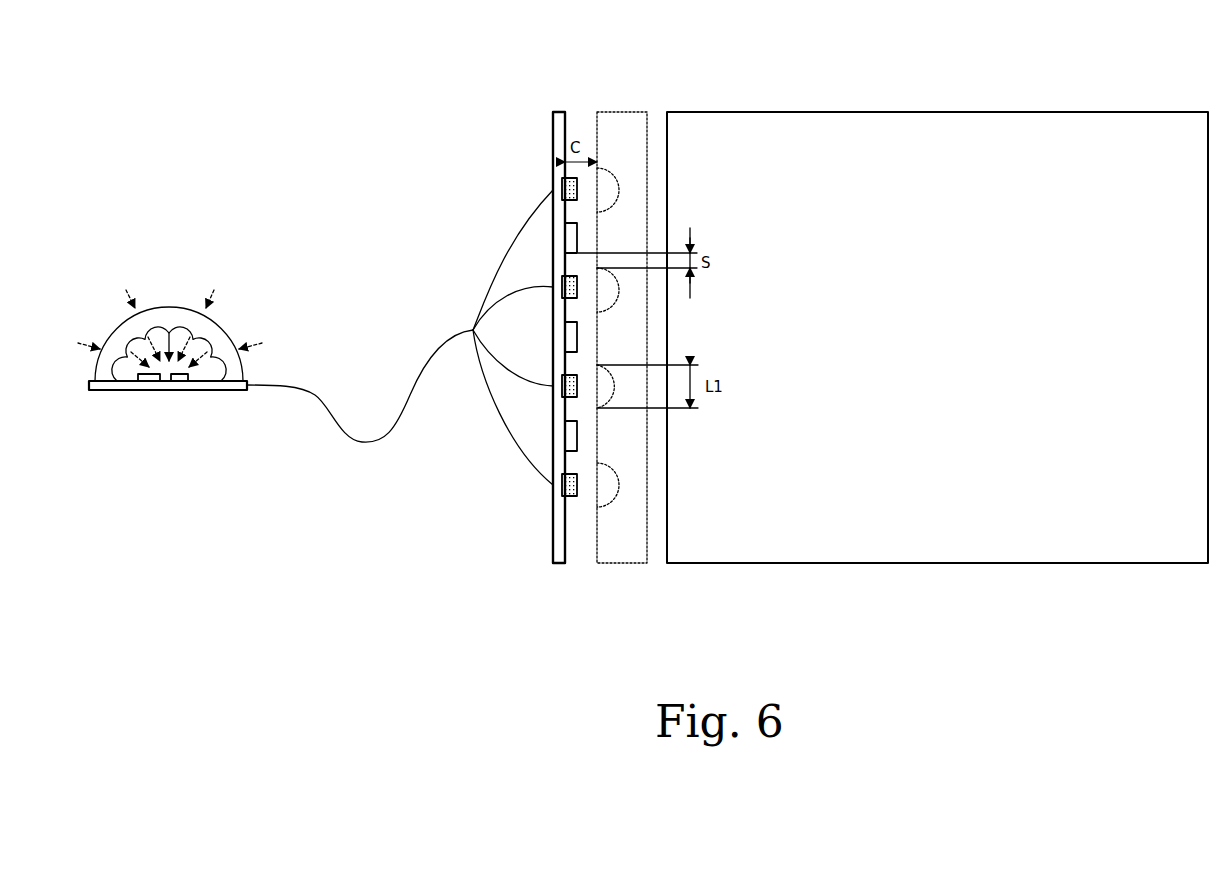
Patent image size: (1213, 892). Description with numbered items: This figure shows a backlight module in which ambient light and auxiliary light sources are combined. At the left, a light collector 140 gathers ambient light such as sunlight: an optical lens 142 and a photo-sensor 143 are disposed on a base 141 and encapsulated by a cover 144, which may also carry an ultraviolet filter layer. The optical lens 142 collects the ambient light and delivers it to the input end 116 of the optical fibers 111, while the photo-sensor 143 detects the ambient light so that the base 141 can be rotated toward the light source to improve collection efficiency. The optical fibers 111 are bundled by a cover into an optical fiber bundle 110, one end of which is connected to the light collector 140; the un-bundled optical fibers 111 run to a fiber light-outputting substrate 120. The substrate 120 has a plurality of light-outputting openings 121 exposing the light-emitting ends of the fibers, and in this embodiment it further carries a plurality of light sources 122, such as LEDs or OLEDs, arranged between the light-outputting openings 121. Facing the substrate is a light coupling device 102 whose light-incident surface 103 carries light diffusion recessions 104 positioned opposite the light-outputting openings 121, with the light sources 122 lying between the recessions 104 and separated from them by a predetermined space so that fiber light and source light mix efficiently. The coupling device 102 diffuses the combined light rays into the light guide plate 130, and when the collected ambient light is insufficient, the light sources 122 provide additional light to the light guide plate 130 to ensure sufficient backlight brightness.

The light collector 140 is at (188, 317).
The base 141 is at (116, 388).
The optical lens 142 is at (157, 311).
The photo-sensor 143 is at (150, 381).
The cover 144 is at (232, 333).
The input end 116 is at (180, 381).
The optical fiber bundle 110 is at (397, 428).
The optical fibers 111 is at (537, 200).
The fiber light-outputting substrate 120 is at (558, 540).
The light-outputting openings 121 is at (570, 497).
The light sources 122 is at (573, 448).
The light coupling device 102 is at (623, 112).
The light-incident surface 103 is at (591, 116).
The light diffusion recessions 104 is at (617, 190).
The light guide plate 130 is at (862, 545).